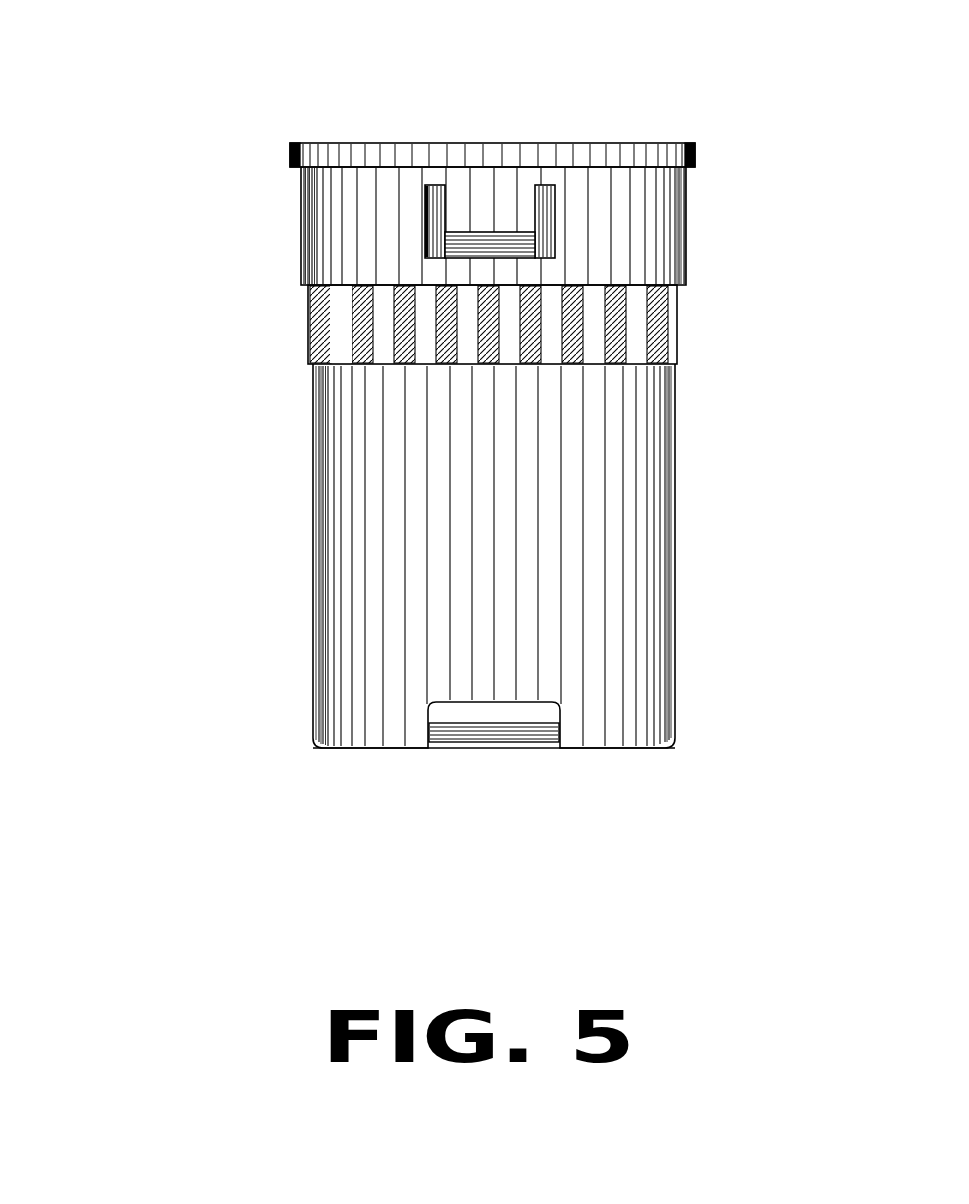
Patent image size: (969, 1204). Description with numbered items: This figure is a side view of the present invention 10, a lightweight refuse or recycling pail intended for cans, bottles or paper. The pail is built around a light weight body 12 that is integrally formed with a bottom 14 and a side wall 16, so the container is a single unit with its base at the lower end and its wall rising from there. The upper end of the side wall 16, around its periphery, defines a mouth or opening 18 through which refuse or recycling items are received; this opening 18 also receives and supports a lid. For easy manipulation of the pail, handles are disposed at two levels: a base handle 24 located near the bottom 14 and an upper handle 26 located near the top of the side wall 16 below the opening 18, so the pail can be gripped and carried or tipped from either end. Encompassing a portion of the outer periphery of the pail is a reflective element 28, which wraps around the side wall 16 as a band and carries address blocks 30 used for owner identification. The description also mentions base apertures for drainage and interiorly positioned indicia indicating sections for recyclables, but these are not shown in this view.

The present invention 10 is at (242, 722).
The body 12 is at (670, 582).
The bottom 14 is at (640, 748).
The side wall 16 is at (672, 415).
The mouth or opening 18 is at (497, 133).
The base handle 24 is at (503, 736).
The upper handle 26 is at (518, 232).
The reflective element 28 is at (318, 312).
The address blocks 30 is at (340, 368).